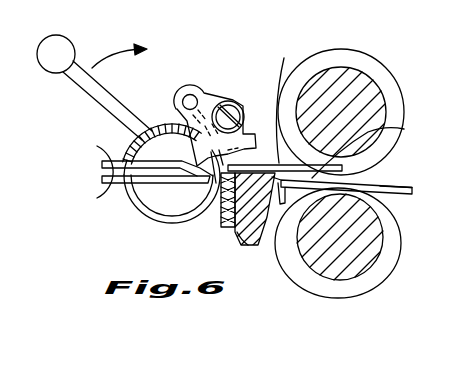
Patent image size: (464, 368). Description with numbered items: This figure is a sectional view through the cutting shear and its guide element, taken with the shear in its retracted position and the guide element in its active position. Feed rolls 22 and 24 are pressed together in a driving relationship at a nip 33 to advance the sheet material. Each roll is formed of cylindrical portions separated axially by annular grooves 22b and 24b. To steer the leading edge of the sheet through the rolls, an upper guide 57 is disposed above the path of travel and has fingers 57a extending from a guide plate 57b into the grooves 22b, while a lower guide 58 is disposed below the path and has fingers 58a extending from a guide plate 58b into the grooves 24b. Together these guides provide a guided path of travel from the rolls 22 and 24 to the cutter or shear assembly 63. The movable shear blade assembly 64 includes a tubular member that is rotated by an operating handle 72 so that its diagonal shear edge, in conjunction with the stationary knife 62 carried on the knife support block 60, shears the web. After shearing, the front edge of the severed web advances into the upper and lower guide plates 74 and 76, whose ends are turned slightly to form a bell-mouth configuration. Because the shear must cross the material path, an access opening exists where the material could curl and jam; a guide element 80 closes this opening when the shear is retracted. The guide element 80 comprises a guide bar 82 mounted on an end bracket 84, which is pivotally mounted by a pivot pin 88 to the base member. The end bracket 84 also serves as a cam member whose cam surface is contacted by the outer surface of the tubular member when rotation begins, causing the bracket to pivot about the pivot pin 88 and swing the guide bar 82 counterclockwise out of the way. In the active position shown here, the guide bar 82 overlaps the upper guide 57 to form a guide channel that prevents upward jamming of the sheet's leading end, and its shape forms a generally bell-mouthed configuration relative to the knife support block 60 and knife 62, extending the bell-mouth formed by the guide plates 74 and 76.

The roll 22 is at (367, 66).
The annular grooves 22b is at (374, 91).
The roll 24 is at (379, 280).
The annular grooves 24b is at (381, 255).
The nip 33 is at (347, 177).
The upper guide 57 is at (283, 102).
The fingers 57a is at (404, 129).
The guide plate 57b is at (217, 223).
The lower guide 58 is at (396, 193).
The fingers 58a is at (419, 173).
The guide plate 58b is at (289, 190).
The knife support block 60 is at (244, 230).
The knife 62 is at (234, 230).
The cutter or shear assembly 63 is at (158, 112).
The movable shear blade assembly 64 is at (116, 208).
The operating handle 72 is at (48, 44).
The upper guide plate 74 is at (117, 163).
The lower guide plate 76 is at (110, 185).
The guide element 80 is at (212, 92).
The guide bar 82 is at (208, 192).
The end bracket 84 is at (236, 102).
The pivot pins 88 is at (192, 94).